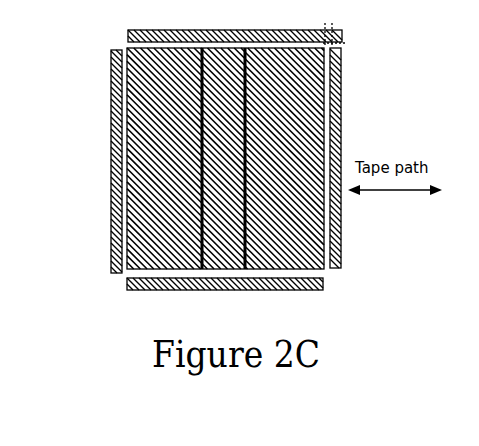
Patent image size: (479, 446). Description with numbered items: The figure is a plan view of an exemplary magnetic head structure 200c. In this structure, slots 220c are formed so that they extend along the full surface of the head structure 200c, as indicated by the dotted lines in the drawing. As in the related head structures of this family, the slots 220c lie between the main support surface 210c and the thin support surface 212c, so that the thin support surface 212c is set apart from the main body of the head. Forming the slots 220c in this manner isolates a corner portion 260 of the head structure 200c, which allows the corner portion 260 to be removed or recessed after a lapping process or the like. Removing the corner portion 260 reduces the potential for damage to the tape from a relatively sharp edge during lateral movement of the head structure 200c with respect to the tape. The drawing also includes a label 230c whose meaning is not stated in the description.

The head structure 200c is at (216, 174).
The main support surface 210c is at (150, 225).
The thin support surface 212c is at (117, 185).
The slots 220c is at (120, 132).
The transducer rows 230c is at (243, 193).
The corner portion 260 is at (343, 33).